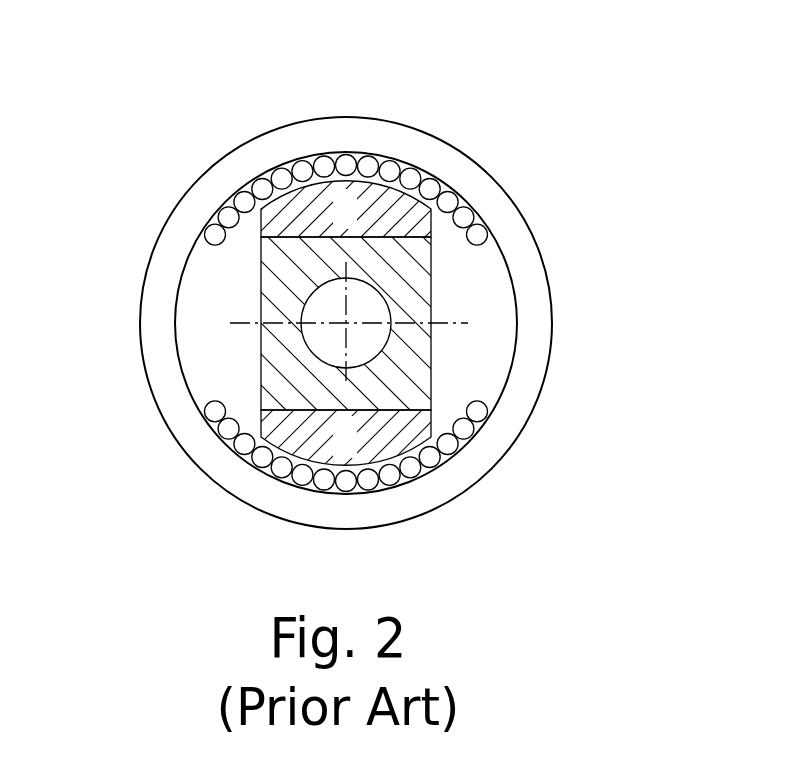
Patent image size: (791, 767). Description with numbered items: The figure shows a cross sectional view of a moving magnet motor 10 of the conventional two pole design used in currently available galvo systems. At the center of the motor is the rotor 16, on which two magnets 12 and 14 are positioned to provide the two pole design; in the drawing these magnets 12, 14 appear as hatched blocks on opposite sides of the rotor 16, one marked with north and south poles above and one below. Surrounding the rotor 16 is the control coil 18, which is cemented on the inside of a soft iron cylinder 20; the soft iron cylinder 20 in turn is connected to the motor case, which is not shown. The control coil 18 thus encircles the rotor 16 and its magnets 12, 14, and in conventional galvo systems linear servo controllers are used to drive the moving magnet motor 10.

The moving magnet motor 10 is at (362, 305).
The magnet 12 is at (263, 227).
The magnet 14 is at (290, 428).
The rotor 16 is at (410, 292).
The control coil 18 is at (463, 213).
The soft iron cylinder 20 is at (187, 196).